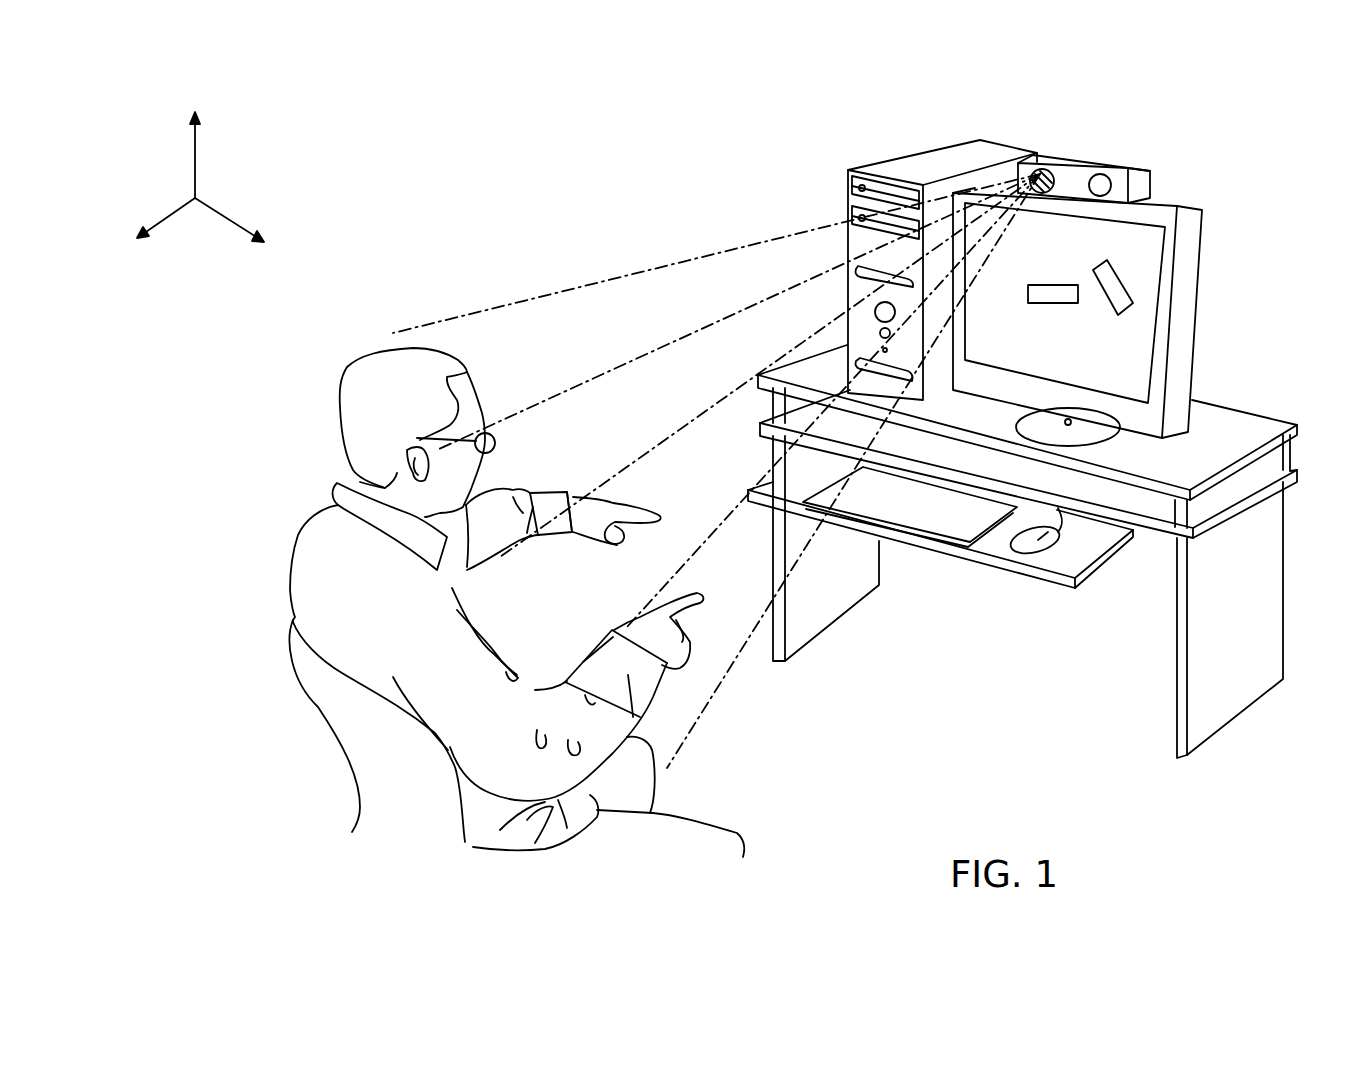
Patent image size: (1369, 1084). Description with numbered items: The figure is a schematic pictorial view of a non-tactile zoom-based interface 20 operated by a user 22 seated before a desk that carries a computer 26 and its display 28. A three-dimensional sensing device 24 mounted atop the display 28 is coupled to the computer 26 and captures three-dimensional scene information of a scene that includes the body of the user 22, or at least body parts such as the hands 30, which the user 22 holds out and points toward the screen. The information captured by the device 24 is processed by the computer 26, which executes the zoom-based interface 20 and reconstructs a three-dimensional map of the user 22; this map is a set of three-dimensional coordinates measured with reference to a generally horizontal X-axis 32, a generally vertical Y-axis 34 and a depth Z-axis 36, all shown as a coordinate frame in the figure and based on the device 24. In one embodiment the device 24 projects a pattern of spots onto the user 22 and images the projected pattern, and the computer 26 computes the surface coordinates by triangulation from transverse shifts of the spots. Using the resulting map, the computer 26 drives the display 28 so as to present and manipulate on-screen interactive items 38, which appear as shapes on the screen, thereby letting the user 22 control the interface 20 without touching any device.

The non-tactile zoom-based interface 20 is at (456, 253).
The user 22 is at (511, 602).
The 3D sensing device 24 is at (1153, 177).
The computer 26 is at (907, 163).
The display 28 is at (1117, 317).
The hands 30 is at (610, 547).
The X-axis 32 is at (236, 226).
The Y-axis 34 is at (195, 156).
The Z-axis 36 is at (151, 226).
The on-screen interactive items 38 is at (1055, 303).